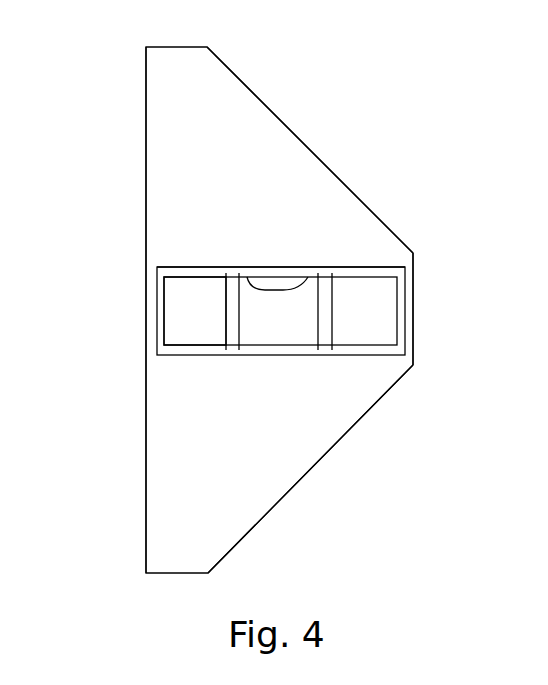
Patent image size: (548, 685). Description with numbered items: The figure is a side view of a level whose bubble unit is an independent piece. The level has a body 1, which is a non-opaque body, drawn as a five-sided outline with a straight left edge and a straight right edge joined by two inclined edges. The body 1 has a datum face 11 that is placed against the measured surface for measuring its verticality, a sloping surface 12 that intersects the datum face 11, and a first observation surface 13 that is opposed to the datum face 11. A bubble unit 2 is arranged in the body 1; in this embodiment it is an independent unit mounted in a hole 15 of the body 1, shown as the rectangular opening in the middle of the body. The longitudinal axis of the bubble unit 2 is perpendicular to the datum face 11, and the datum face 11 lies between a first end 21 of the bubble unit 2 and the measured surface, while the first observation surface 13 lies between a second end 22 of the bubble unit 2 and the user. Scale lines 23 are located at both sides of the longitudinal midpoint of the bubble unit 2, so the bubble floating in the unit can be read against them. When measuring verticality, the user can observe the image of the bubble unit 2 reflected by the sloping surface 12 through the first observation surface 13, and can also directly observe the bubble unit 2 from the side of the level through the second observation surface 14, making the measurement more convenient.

The body 1 is at (192, 207).
The datum face 11 is at (413, 298).
The sloping surface 12 is at (297, 137).
The first observation surface 13 is at (146, 442).
The second observation surface 14 is at (213, 467).
The hole 15 is at (325, 267).
The bubble unit 2 is at (275, 337).
The first end 21 is at (380, 312).
The second end 22 is at (178, 325).
The scale lines 23 is at (238, 277).